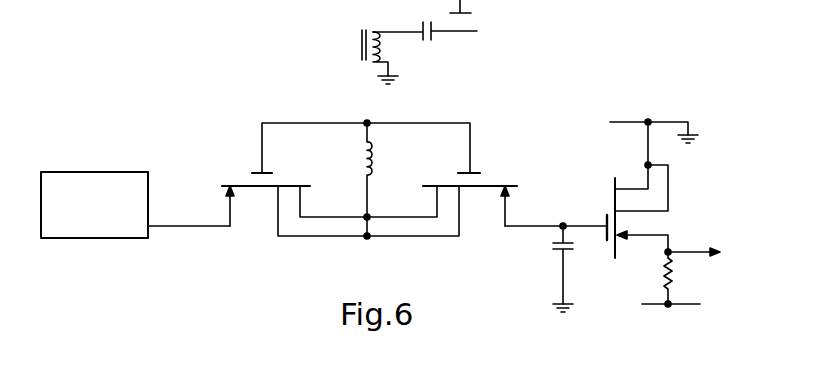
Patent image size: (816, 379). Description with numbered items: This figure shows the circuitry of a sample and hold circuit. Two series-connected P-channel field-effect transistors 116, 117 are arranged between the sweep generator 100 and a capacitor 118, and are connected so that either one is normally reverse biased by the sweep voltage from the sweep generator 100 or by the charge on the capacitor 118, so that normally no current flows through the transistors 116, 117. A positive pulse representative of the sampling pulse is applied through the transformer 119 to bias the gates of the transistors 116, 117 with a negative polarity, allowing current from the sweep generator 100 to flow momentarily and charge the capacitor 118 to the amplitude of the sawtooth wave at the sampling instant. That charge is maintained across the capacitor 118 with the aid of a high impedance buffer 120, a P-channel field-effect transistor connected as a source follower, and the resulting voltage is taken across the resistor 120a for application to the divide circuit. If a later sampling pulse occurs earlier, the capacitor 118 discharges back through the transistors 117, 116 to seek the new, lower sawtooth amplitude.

The sweep generator 100 is at (126, 170).
The field-effect transistor 116 is at (236, 165).
The field-effect transistor 117 is at (492, 170).
The capacitor 118 is at (550, 250).
The transformer 119 is at (395, 55).
The high impedance buffer 120 is at (607, 195).
The resistor 120a is at (662, 282).